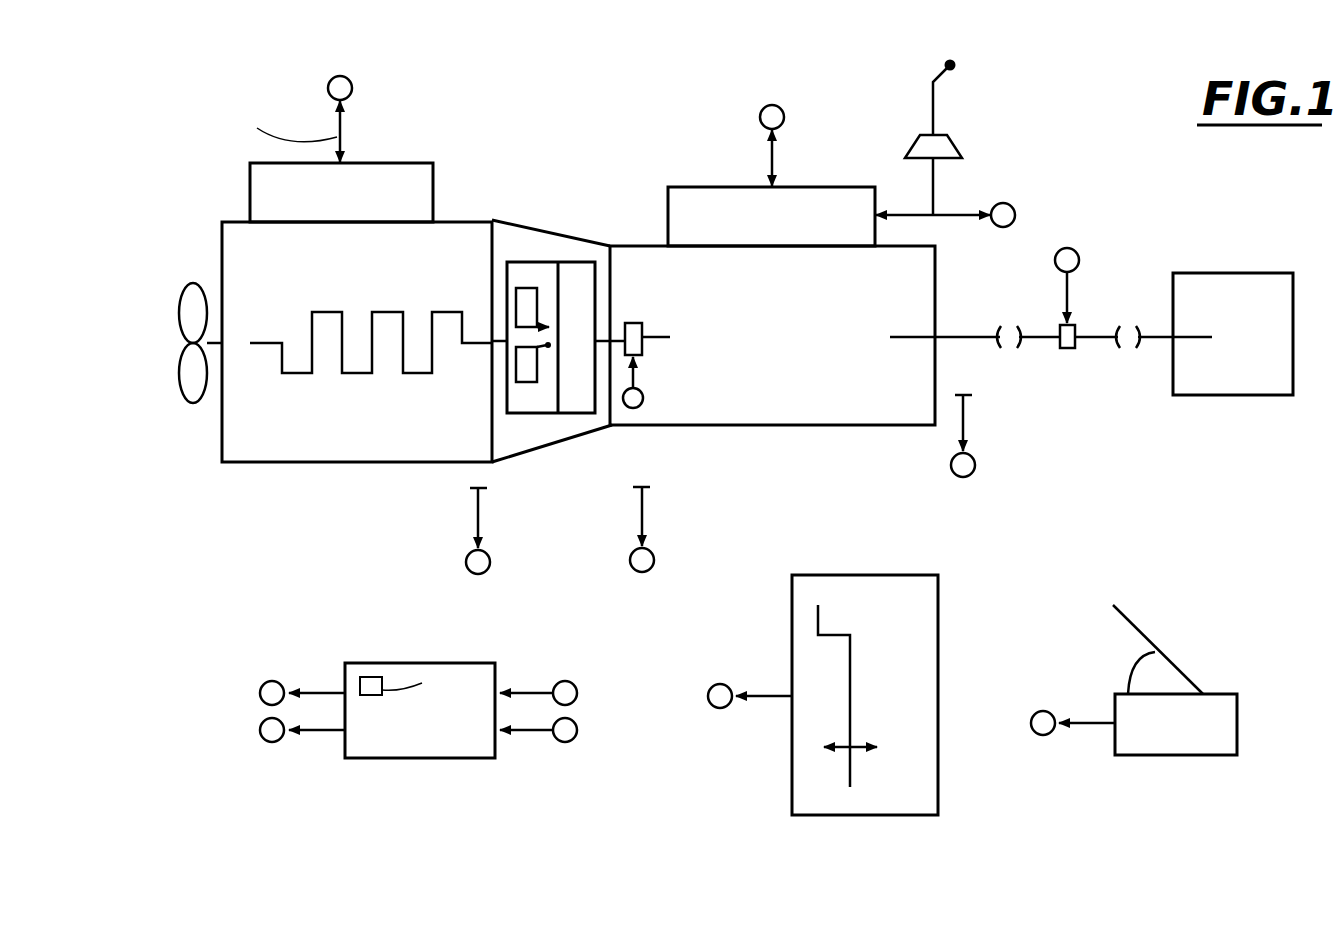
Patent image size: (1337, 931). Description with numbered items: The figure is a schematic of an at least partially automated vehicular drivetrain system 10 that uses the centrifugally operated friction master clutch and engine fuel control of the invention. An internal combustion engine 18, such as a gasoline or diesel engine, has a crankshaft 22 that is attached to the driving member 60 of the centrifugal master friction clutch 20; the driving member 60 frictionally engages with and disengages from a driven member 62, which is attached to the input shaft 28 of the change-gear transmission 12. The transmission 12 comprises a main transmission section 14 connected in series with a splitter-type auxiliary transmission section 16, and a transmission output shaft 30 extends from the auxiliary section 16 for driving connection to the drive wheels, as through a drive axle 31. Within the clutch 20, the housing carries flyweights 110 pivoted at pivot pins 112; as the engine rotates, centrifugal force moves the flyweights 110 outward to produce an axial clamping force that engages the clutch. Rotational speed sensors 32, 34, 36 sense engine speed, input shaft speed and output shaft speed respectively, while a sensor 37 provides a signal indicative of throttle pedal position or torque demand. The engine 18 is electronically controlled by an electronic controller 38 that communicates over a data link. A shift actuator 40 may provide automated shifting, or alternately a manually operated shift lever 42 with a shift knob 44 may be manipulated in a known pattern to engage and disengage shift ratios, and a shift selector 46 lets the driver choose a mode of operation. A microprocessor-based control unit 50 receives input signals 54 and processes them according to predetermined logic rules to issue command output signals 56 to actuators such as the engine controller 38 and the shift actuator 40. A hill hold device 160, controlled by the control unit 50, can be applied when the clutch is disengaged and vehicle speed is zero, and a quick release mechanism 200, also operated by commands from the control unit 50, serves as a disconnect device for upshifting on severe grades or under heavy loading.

The vehicular drivetrain system 10 is at (1113, 130).
The change-gear transmission 12 is at (788, 448).
The main transmission section 14 is at (753, 400).
The auxiliary transmission section 16 is at (878, 400).
The internal combustion engine 18 is at (342, 432).
The centrifugal master friction clutch 20 is at (598, 207).
The crankshaft 22 is at (310, 330).
The input shaft 28 is at (660, 340).
The transmission output shaft 30 is at (960, 333).
The drive axle 31 is at (1218, 280).
The engine speed sensor 32 is at (475, 507).
The input shaft speed sensor 34 is at (643, 500).
The output shaft speed sensor 36 is at (978, 450).
The throttle sensor 37 is at (1175, 723).
The electronic engine controller 38 is at (372, 192).
The shift actuator 40 is at (817, 208).
The shift lever 42 is at (948, 98).
The shift knob 44 is at (957, 65).
The shift selector 46 is at (757, 607).
The control unit 50 is at (405, 745).
The input signals 54 is at (525, 762).
The command output signals 56 is at (315, 763).
The driving member 60 is at (543, 277).
The driven member 62 is at (575, 400).
The flyweights 110 is at (492, 372).
The pivot pins 112 is at (550, 344).
The hill hold device 160 is at (1067, 348).
The quick release mechanism 200 is at (645, 327).